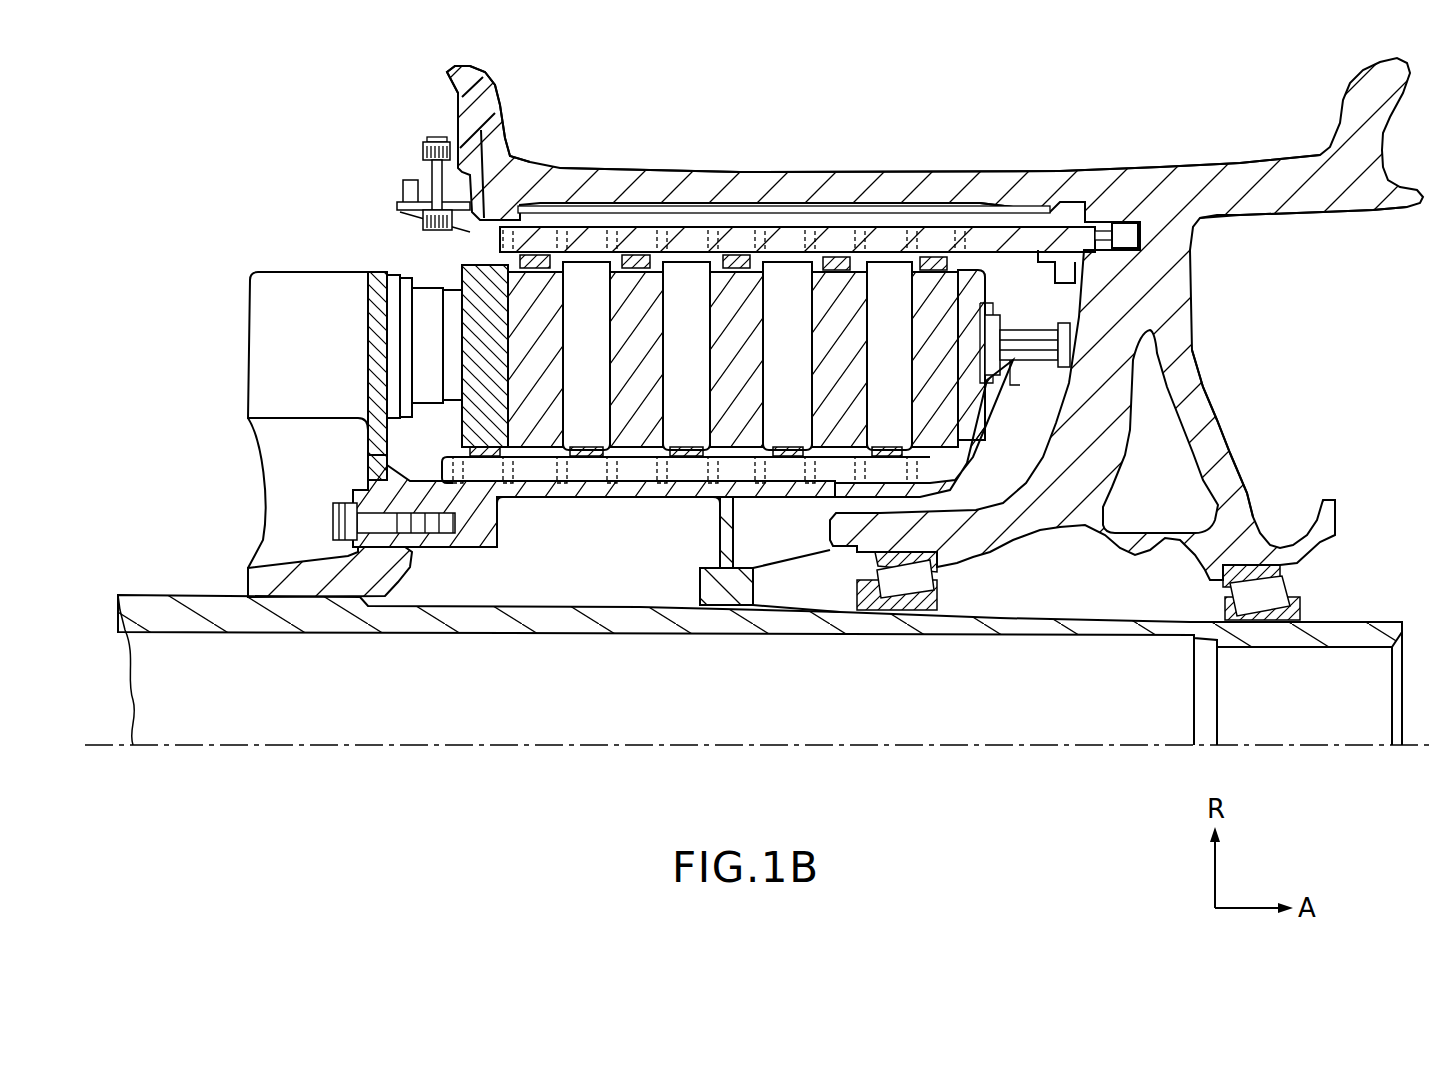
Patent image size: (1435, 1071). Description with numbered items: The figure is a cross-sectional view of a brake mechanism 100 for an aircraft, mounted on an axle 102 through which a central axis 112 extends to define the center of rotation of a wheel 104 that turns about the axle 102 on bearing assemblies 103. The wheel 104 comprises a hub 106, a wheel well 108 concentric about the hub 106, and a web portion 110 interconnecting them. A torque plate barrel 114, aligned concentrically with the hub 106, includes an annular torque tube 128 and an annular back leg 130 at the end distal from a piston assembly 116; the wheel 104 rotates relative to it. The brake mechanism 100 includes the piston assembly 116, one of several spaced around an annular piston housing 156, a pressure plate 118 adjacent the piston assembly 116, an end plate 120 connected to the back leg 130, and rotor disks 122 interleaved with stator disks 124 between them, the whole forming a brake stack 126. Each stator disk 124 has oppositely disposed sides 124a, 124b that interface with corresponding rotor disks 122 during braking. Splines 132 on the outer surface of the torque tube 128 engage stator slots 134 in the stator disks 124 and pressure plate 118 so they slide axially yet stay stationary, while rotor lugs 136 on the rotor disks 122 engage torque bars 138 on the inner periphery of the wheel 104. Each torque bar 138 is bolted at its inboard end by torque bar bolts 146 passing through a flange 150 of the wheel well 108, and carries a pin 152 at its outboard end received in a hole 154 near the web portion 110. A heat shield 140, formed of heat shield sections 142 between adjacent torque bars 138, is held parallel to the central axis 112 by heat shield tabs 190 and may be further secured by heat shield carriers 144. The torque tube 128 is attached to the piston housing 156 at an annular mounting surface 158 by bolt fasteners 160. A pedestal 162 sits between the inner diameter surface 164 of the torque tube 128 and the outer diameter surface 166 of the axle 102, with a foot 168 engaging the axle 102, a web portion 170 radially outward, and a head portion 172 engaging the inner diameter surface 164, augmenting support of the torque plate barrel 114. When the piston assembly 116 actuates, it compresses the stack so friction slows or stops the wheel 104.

The brake mechanism 100 is at (245, 133).
The axle 102 is at (1057, 632).
The bearing assemblies 103 is at (1267, 588).
The wheel 104 is at (935, 315).
The hub 106 is at (1032, 538).
The wheel well 108 is at (1080, 175).
The web portion 110 is at (1217, 407).
The central axis 112 is at (1012, 748).
The torque plate barrel 114 is at (504, 399).
The piston assembly 116 is at (501, 395).
The pressure plate 118 is at (457, 275).
The end plate 120 is at (683, 280).
The rotor disks 122 is at (540, 283).
The stator disks 124 is at (687, 272).
The side of stator disk 124a is at (563, 307).
The side of stator disk 124b is at (612, 343).
The brake stack 126 is at (848, 265).
The torque tube 128 is at (515, 500).
The back leg 130 is at (1002, 413).
The splines 132 is at (442, 472).
The stator slots 134 is at (862, 482).
The rotor lugs 136 is at (610, 237).
The torque bars 138 is at (995, 237).
The heat shield 140 is at (735, 240).
The heat shield sections 142 is at (845, 270).
The heat shield carriers 144 is at (482, 195).
The torque bar bolts 146 is at (440, 138).
The flange 150 is at (410, 180).
The pin 152 is at (1090, 232).
The hole 154 is at (1122, 230).
The annular piston housing 156 is at (250, 272).
The annular mounting surface 158 is at (450, 548).
The bolt fasteners 160 is at (333, 520).
The pedestal 162 is at (700, 536).
The inner diameter surface 164 is at (607, 497).
The outer diameter surface 166 is at (763, 605).
The foot 168 is at (755, 572).
The web portion 170 is at (718, 552).
The head portion 172 is at (720, 498).
The heat shield tabs 190 is at (1068, 262).